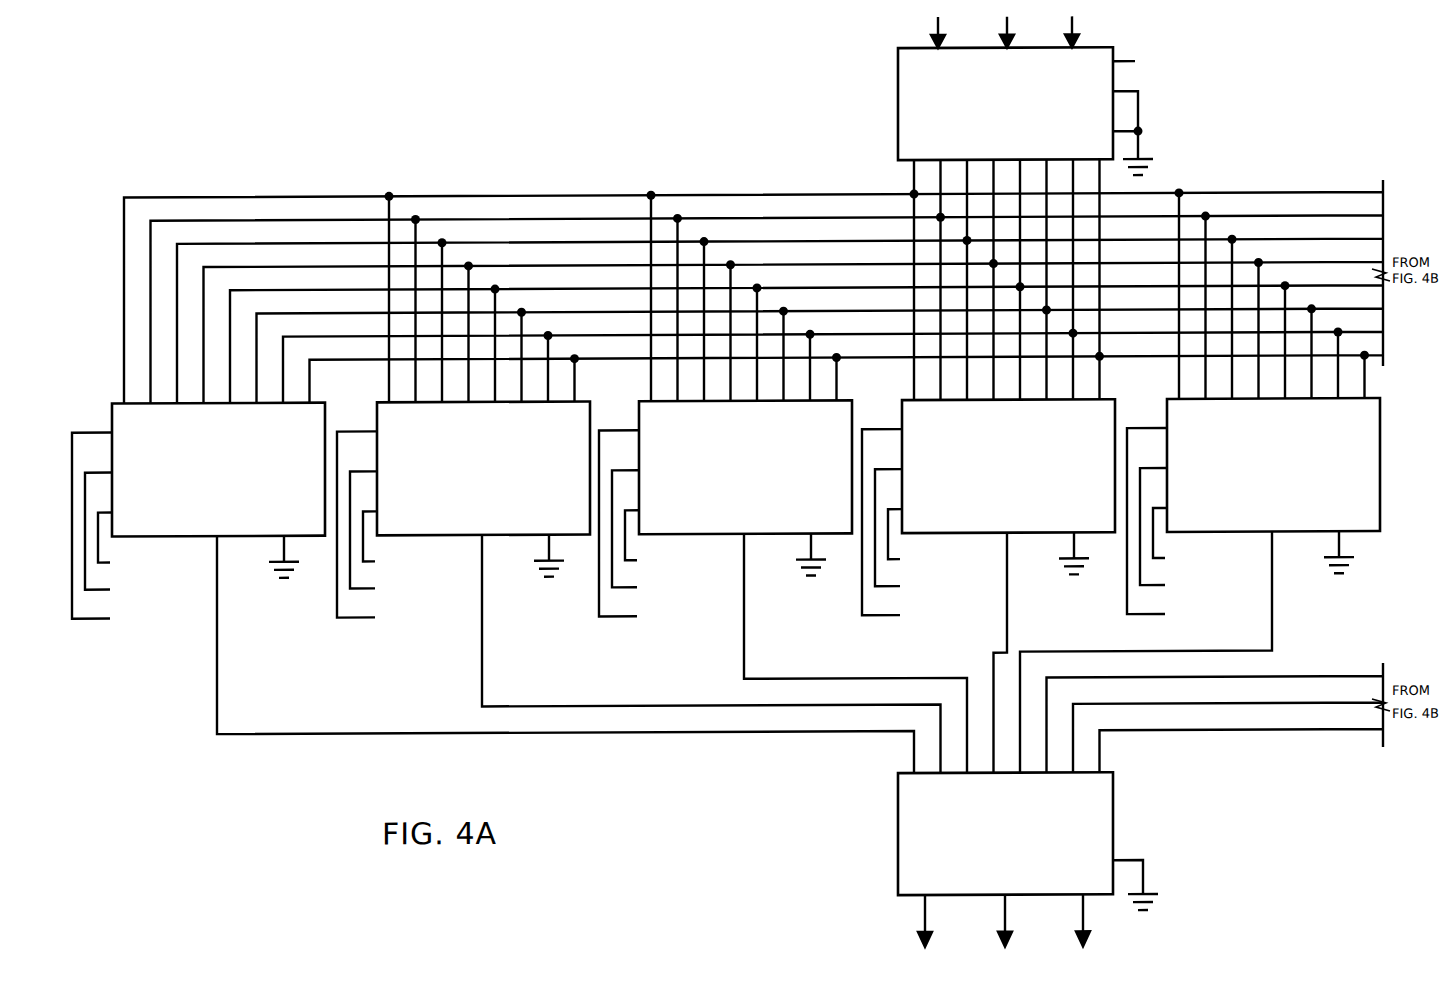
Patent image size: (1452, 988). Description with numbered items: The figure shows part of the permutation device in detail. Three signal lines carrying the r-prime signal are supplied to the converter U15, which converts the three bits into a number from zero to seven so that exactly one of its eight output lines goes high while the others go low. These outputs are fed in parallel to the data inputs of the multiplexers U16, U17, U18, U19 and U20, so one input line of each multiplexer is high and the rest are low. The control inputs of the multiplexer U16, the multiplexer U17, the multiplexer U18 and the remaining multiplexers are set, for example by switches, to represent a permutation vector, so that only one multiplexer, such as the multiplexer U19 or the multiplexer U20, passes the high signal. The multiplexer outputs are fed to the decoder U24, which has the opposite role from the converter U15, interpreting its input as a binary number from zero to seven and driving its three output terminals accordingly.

The converter U15 is at (1029, 95).
The multiplexer U16 is at (727, 478).
The multiplexer U17 is at (639, 482).
The multiplexer U18 is at (783, 481).
The multiplexer U19 is at (988, 466).
The multiplexer U20 is at (1200, 480).
The decoder U24 is at (1140, 815).